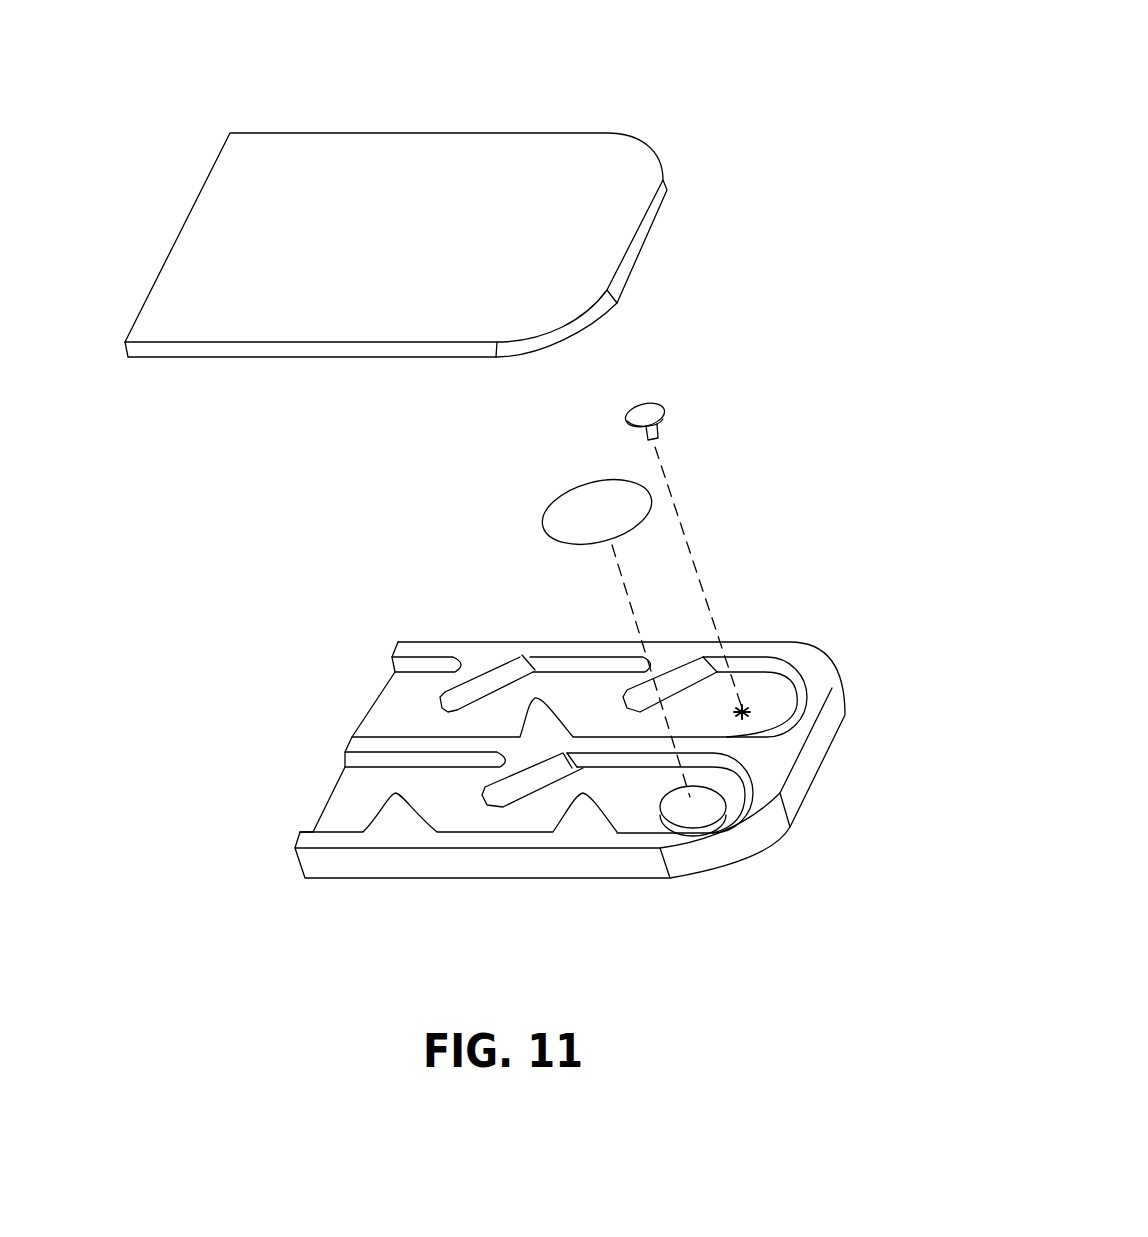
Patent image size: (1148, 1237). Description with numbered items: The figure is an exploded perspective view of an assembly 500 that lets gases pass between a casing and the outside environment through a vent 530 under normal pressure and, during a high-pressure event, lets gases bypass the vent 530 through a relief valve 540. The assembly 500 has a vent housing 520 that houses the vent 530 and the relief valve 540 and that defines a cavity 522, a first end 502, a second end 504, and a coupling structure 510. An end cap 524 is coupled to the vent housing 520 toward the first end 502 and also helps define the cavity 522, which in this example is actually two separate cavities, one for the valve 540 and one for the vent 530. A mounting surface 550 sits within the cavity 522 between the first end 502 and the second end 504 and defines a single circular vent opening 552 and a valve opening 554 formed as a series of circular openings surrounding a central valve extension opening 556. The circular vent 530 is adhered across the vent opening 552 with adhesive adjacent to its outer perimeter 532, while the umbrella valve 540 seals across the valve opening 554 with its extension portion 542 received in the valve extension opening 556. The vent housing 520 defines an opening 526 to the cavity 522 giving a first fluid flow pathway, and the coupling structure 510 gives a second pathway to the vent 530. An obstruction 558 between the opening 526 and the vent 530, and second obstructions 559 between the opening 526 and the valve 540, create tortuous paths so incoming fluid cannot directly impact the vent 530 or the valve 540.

The assembly 500 is at (655, 72).
The first end 502 is at (255, 802).
The second end 504 is at (340, 945).
The coupling structure 510 is at (640, 880).
The vent housing 520 is at (342, 870).
The cavity 522 is at (578, 690).
The end cap 524 is at (238, 332).
The opening 526 is at (360, 782).
The vent 530 is at (558, 517).
The outer perimeter 532 is at (608, 480).
The relief valve 540 is at (645, 413).
The extension portion 542 is at (657, 432).
The mounting surface 550 is at (512, 823).
The vent opening 552 is at (713, 810).
The valve opening 554 is at (790, 680).
The valve extension opening 556 is at (745, 715).
The obstruction 558 is at (492, 790).
The second obstruction 559 is at (535, 700).